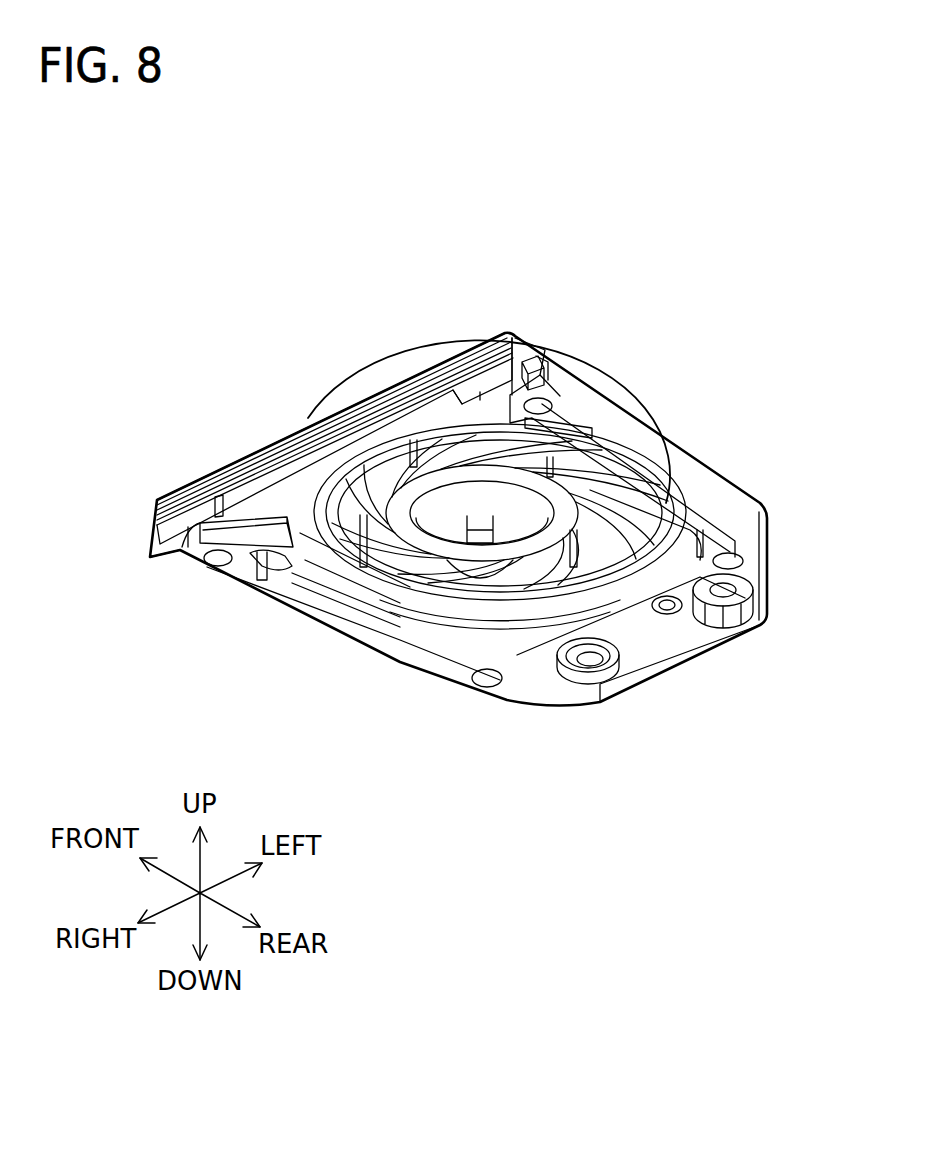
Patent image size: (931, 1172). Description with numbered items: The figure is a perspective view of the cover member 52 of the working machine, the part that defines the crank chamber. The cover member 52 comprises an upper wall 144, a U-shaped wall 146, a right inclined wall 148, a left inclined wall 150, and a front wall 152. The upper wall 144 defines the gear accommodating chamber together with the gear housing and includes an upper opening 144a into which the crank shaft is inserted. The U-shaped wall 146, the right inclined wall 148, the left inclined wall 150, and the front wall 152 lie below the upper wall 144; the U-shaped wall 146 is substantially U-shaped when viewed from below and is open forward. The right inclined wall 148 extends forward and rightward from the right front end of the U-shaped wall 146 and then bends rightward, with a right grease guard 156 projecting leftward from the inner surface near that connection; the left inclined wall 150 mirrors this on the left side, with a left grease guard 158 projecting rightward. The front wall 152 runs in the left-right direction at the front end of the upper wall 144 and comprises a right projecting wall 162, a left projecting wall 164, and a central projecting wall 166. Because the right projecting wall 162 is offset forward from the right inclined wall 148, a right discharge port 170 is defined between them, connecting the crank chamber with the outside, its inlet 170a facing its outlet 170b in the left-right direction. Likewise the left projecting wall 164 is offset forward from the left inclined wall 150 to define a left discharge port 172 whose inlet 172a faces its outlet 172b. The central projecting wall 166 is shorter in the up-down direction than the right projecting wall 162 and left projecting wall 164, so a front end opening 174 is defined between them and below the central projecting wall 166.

The cover member 52 is at (702, 356).
The upper wall 144 is at (367, 487).
The upper opening 144a is at (438, 466).
The U-shaped wall 146 is at (640, 468).
The right inclined wall 148 is at (258, 555).
The left inclined wall 150 is at (552, 406).
The front wall 152 is at (263, 438).
The right grease guard 156 is at (288, 567).
The left grease guard 158 is at (552, 428).
The right projecting wall 162 is at (195, 510).
The left projecting wall 164 is at (485, 373).
The central projecting wall 166 is at (322, 450).
The right discharge port 170 is at (175, 560).
The inlet of the right discharge port 170a is at (195, 538).
The outlet of the right discharge port 170b is at (160, 557).
The left discharge port 172 is at (550, 390).
The inlet of the left discharge port 172a is at (520, 360).
The outlet of the left discharge port 172b is at (540, 372).
The front end opening 174 is at (428, 495).